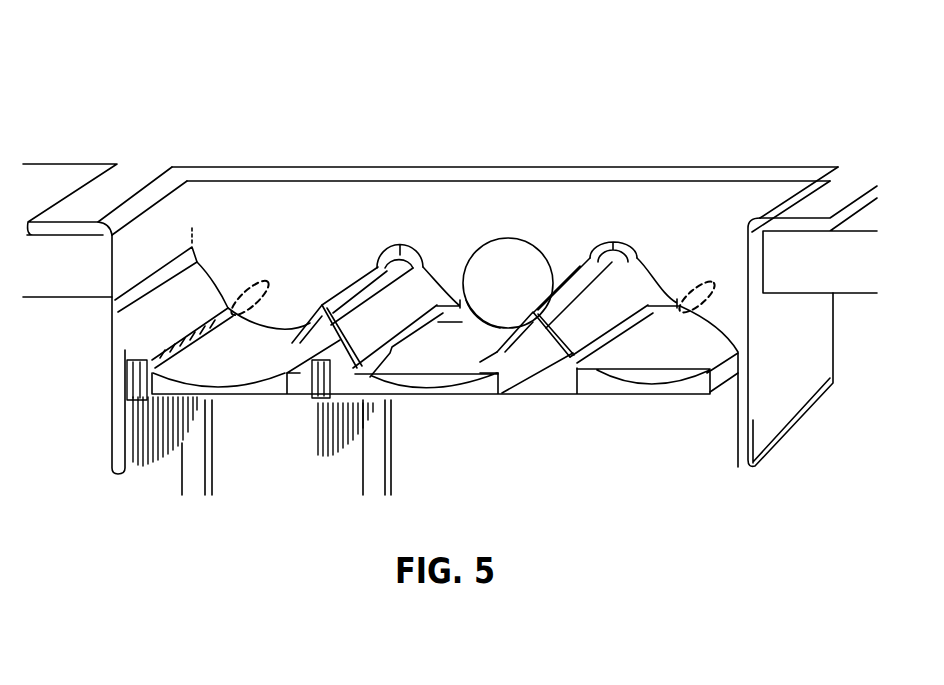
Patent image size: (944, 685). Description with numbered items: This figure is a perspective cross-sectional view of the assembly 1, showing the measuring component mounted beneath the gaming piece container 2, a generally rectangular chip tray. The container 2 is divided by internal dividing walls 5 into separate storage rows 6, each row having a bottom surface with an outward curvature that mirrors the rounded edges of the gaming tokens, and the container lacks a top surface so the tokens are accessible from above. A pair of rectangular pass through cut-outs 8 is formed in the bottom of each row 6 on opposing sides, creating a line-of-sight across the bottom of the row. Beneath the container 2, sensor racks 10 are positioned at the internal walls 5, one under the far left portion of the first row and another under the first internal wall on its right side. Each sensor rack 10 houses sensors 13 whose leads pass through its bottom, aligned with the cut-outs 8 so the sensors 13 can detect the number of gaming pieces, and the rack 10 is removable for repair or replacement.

The assembly 1 is at (144, 84).
The gaming piece container 2 is at (436, 163).
The internal dividing wall 5 is at (578, 285).
The storage row 6 is at (238, 237).
The pass through cut-out 8 is at (268, 280).
The sensor rack 10 is at (353, 375).
The sensor 13 is at (138, 397).